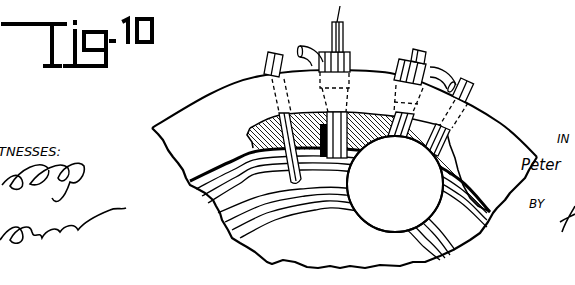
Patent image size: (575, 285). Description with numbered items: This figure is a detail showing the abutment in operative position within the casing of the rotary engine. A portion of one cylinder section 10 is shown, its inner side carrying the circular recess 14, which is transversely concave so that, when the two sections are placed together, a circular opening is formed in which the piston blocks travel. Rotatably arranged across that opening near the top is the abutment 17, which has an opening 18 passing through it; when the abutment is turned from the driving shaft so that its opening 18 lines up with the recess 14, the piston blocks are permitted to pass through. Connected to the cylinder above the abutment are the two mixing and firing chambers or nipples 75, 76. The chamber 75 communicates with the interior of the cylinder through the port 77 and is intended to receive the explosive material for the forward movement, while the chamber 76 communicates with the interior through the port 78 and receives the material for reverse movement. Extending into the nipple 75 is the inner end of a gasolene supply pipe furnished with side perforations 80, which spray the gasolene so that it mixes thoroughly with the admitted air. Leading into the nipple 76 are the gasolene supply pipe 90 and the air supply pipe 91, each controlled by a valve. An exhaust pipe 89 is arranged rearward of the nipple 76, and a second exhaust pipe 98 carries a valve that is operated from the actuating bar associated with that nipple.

The cylinder section 10 is at (213, 93).
The circular recess 14 is at (221, 223).
The abutment 17 is at (395, 184).
The abutment opening 18 is at (395, 184).
The mixing and firing chamber 75 is at (350, 54).
The mixing and firing chamber 76 is at (429, 70).
The port 77 is at (299, 166).
The port 78 is at (393, 114).
The side perforations 80 is at (343, 22).
The exhaust pipe 89 is at (473, 92).
The gasolene supply pipe 90 is at (420, 49).
The air supply pipe 91 is at (457, 72).
The exhaust pipe 98 is at (266, 65).